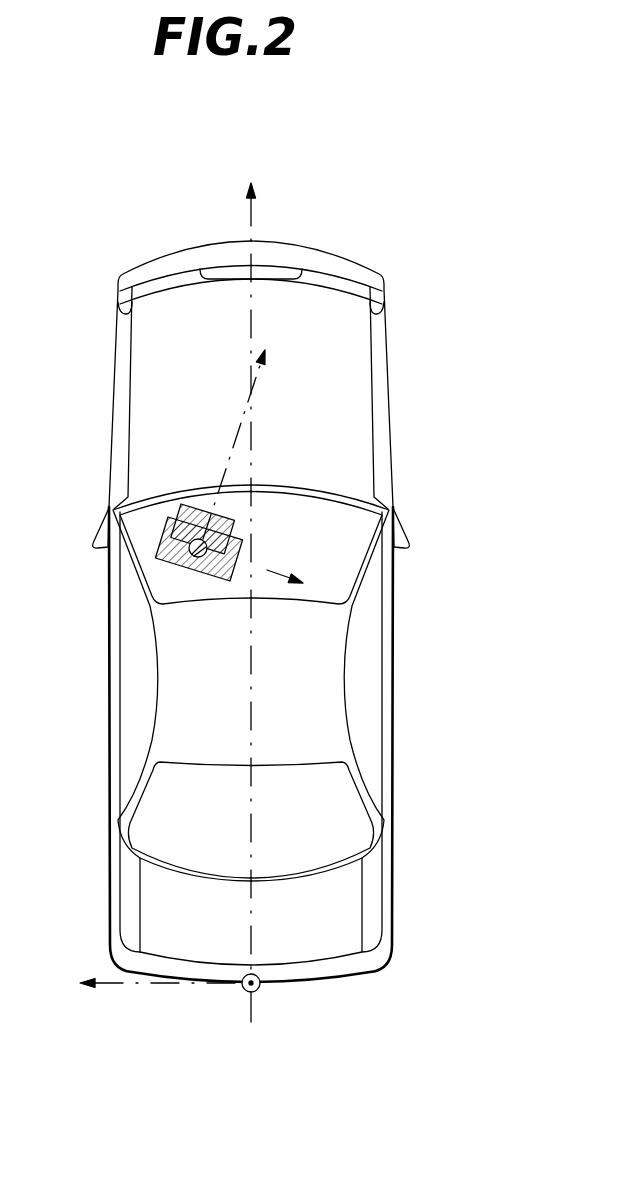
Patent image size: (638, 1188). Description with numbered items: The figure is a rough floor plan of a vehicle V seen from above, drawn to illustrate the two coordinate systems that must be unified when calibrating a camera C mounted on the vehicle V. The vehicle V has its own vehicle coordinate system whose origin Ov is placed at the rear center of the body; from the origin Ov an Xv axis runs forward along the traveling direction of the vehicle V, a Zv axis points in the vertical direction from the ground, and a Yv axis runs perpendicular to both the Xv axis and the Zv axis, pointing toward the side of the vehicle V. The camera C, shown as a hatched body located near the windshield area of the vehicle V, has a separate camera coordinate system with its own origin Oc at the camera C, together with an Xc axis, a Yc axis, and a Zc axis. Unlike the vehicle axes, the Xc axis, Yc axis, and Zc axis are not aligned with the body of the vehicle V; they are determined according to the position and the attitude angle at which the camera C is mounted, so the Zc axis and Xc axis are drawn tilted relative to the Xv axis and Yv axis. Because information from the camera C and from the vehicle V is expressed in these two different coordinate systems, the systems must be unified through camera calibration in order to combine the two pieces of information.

The vehicle V is at (392, 377).
The camera C is at (162, 530).
The origin of the camera coordinate system Oc is at (189, 549).
The Xc axis Xc is at (298, 583).
The Yc axis Yc is at (198, 576).
The Zc axis Zc is at (250, 444).
The origin of the vehicle coordinate system Ov is at (260, 989).
The Xv axis Xv is at (250, 568).
The Yv axis Yv is at (145, 982).
The Zv axis Zv is at (234, 1008).